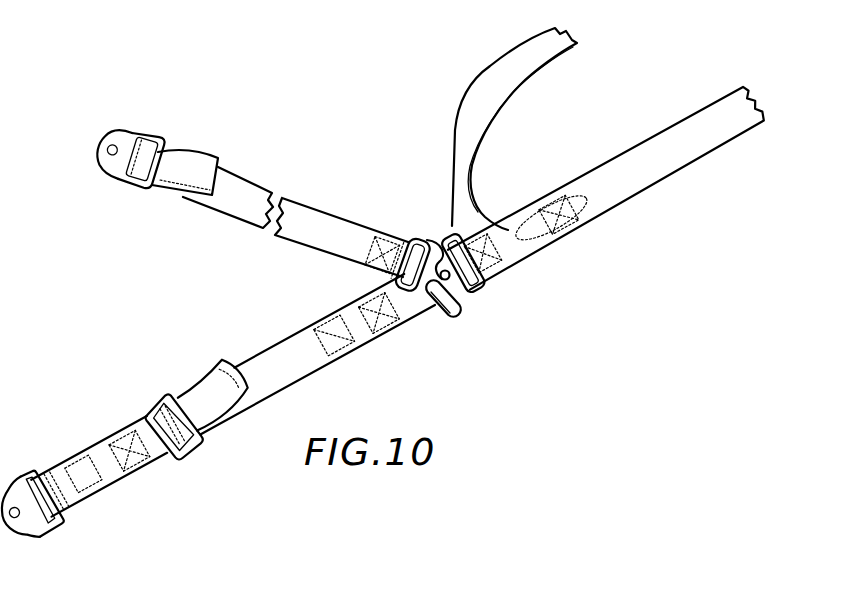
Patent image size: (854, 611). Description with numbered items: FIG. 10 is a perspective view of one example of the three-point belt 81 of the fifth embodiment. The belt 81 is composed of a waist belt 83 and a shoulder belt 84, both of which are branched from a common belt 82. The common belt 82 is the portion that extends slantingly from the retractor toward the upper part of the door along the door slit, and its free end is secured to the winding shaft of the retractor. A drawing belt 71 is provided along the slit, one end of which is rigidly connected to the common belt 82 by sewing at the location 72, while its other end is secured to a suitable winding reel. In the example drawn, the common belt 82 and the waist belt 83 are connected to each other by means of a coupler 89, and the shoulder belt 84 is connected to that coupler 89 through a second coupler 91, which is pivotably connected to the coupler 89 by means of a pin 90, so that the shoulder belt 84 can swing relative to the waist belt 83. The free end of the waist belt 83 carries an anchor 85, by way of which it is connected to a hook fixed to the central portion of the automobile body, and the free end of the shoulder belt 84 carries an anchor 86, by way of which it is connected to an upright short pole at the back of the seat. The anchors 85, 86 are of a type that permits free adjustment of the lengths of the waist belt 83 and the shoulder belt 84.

The drawing belt 71 is at (481, 80).
The sewn connection 72 is at (549, 208).
The belt 81 is at (547, 273).
The common belt 82 is at (667, 177).
The waist belt 83 is at (274, 346).
The shoulder belt 84 is at (292, 196).
The anchor 85 is at (21, 478).
The anchor 86 is at (126, 129).
The coupler 89 is at (446, 237).
The pin 90 is at (453, 287).
The coupler 91 is at (417, 236).